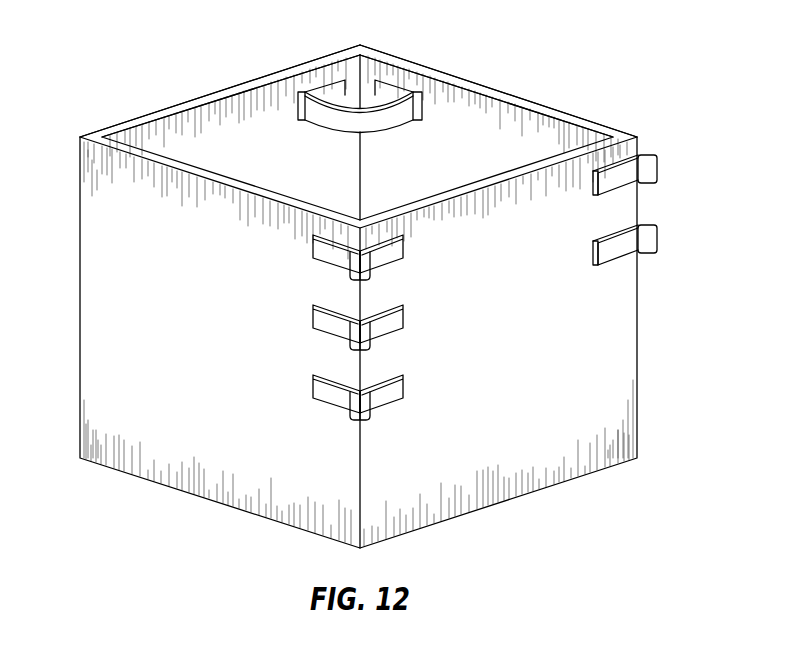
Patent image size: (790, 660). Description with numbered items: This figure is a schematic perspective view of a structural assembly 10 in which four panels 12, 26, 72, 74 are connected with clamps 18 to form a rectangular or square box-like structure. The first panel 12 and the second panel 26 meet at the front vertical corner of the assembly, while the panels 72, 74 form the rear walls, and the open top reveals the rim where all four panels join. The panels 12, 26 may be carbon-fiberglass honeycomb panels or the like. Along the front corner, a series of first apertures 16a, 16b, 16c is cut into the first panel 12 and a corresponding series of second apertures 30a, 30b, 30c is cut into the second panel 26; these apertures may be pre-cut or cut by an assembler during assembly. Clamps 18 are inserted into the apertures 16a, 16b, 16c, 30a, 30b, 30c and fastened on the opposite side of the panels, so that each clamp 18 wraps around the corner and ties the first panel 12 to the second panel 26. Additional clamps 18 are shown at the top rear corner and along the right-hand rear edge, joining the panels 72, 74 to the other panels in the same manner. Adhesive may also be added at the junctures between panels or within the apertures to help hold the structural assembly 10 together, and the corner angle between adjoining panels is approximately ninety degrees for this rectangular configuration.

The structural assembly 10 is at (556, 76).
The first panel 12 is at (170, 394).
The second panel 26 is at (577, 394).
The panel 72 is at (464, 153).
The panel 74 is at (272, 153).
The first aperture 16a is at (313, 247).
The first aperture 16b is at (313, 317).
The first aperture 16c is at (313, 387).
The second aperture 30a is at (405, 242).
The second aperture 30b is at (405, 312).
The second aperture 30c is at (405, 382).
The clamp 18 is at (375, 117).